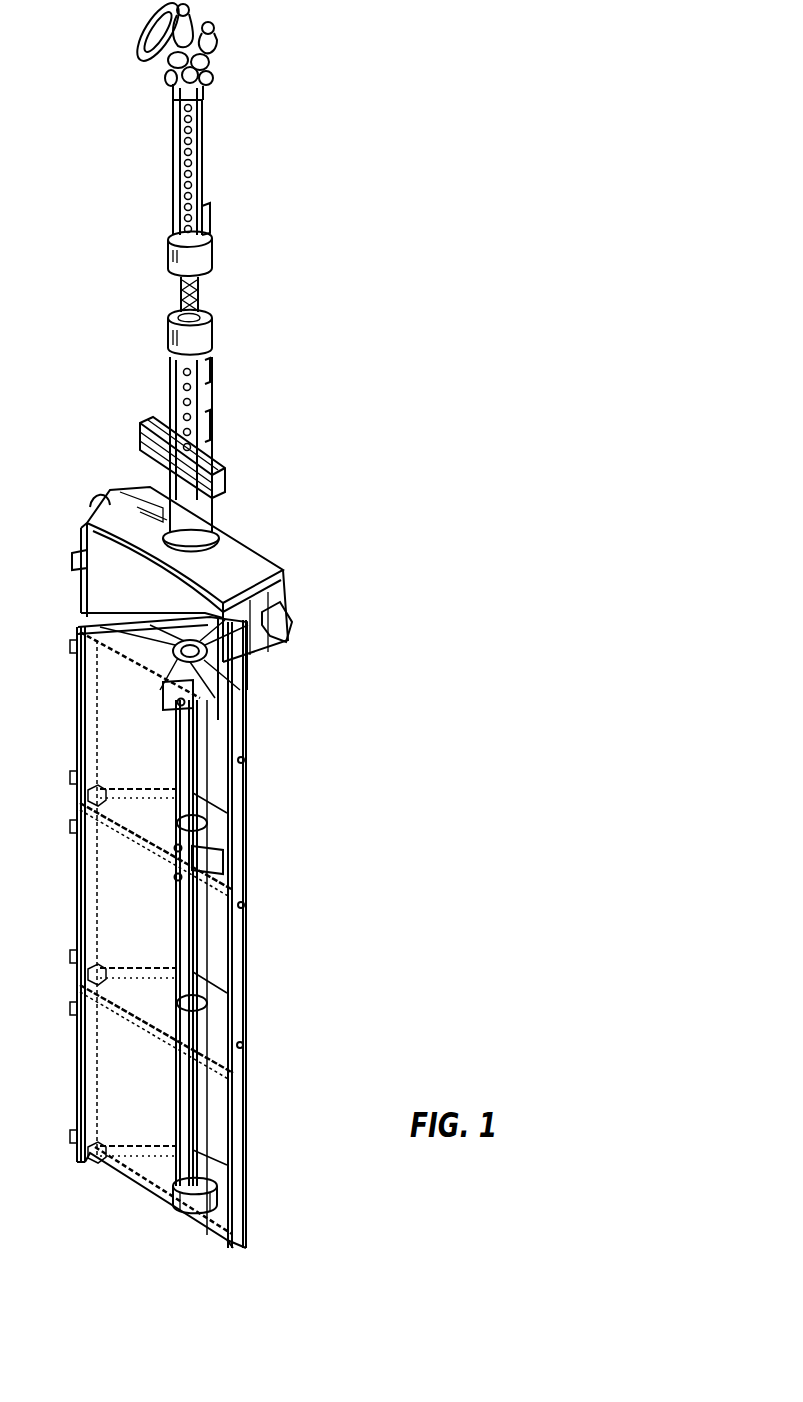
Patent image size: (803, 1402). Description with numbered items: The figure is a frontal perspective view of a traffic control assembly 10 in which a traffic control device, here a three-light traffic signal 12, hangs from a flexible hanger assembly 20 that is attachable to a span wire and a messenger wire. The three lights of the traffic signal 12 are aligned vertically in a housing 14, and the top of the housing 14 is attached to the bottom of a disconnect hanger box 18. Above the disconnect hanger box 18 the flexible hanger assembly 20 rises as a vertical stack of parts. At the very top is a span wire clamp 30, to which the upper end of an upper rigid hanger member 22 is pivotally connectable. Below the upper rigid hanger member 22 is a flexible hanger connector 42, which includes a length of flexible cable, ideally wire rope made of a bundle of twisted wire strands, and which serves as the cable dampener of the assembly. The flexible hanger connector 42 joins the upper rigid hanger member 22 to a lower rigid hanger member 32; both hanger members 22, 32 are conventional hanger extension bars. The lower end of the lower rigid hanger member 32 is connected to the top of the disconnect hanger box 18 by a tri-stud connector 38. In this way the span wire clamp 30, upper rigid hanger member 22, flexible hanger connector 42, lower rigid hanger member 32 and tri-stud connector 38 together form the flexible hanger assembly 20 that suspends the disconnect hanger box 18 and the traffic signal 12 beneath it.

The traffic control assembly 10 is at (350, 355).
The traffic signal 12 is at (242, 805).
The housing 14 is at (248, 973).
The disconnect hanger box 18 is at (258, 567).
The flexible hanger assembly 20 is at (204, 164).
The upper rigid hanger member 22 is at (173, 143).
The span wire clamp 30 is at (222, 53).
The lower rigid hanger member 32 is at (172, 387).
The tri-stud connector 38 is at (226, 477).
The flexible hanger connector 42 is at (202, 286).